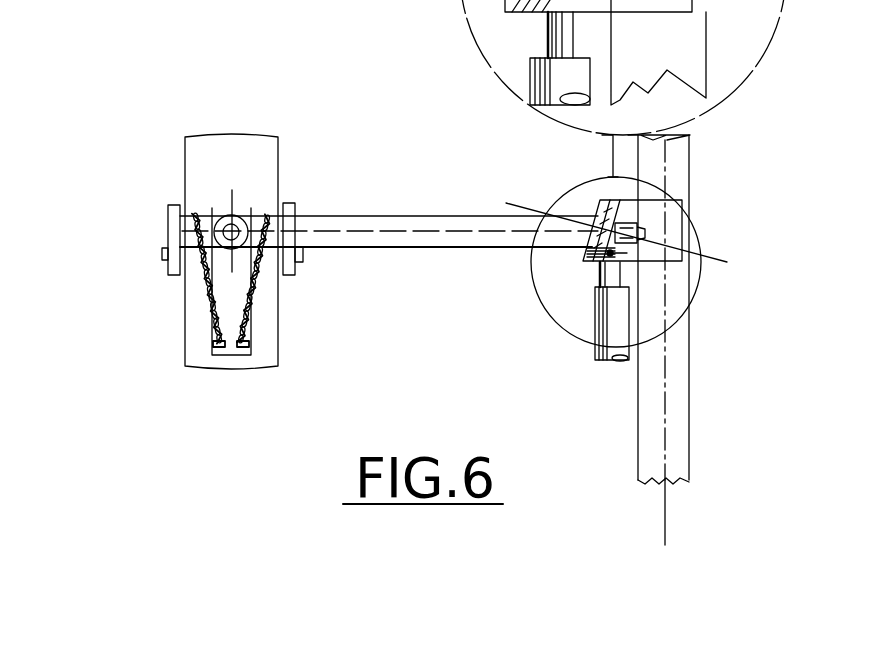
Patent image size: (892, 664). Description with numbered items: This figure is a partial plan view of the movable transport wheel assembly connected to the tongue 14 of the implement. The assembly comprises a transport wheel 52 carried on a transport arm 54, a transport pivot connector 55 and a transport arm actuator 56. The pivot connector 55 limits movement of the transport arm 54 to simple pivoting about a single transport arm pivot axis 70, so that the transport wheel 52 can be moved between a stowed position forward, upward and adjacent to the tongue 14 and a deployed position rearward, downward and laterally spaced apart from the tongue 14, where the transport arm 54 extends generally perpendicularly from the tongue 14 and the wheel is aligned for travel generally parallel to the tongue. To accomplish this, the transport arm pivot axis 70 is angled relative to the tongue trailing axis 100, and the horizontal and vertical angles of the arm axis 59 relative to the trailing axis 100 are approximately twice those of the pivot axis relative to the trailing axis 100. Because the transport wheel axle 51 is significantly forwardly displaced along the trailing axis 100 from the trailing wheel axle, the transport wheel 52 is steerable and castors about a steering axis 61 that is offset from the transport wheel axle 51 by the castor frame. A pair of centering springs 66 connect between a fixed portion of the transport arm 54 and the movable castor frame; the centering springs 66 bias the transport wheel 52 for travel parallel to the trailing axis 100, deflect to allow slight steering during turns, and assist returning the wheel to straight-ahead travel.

The tongue 14 is at (706, 35).
The transport wheel axle 51 is at (163, 257).
The transport wheel 52 is at (223, 135).
The transport arm 54 is at (224, 234).
The transport pivot connector 55 is at (634, 249).
The transport arm actuator 56 is at (607, 320).
The arm axis 59 is at (383, 232).
The steering axis 61 is at (213, 243).
The centering springs 66 is at (252, 282).
The transport arm pivot axis 70 is at (715, 260).
The tongue trailing axis 100 is at (667, 527).